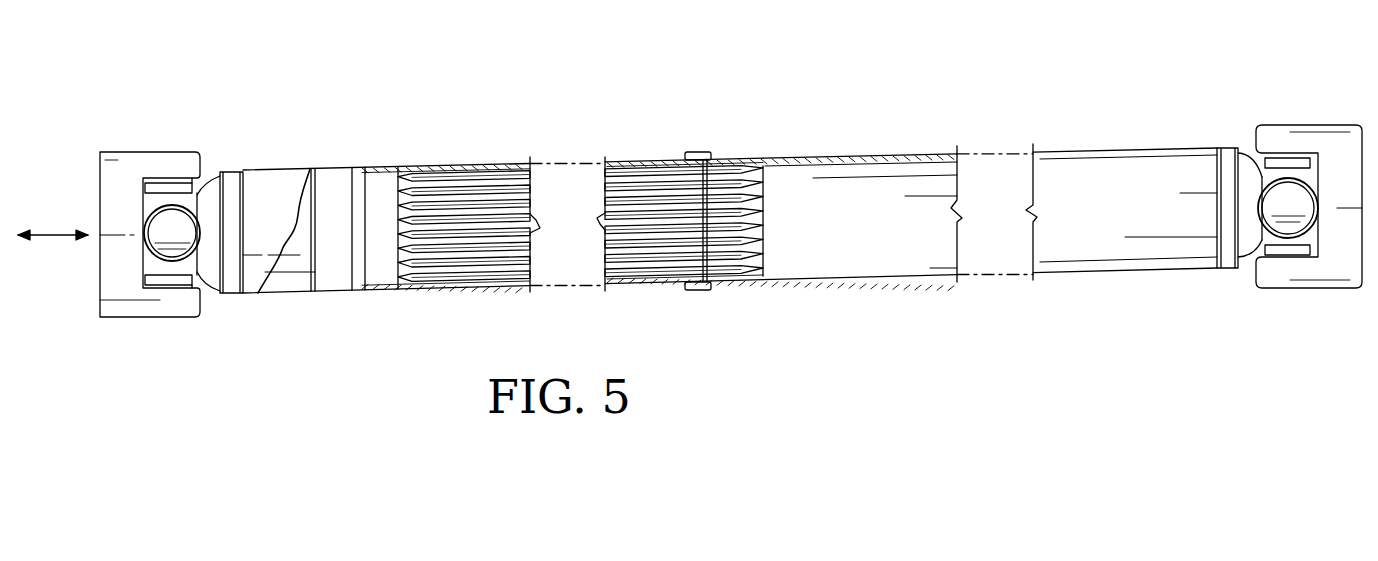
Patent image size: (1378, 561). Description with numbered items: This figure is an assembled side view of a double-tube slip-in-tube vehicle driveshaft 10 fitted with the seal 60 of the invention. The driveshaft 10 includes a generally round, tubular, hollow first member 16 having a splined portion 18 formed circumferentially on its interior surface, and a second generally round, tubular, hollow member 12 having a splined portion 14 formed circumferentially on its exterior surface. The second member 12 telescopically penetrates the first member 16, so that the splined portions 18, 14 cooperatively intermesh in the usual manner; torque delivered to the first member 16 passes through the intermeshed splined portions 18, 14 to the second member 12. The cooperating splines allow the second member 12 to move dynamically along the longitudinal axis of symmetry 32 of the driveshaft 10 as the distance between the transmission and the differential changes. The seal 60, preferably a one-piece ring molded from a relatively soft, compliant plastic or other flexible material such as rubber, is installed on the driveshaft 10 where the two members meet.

The vehicle driveshaft 10 is at (1087, 70).
The second member 12 is at (914, 153).
The splined portion 14 is at (740, 286).
The first member 16 is at (443, 166).
The splined portion 18 is at (653, 290).
The longitudinal axis of symmetry 32 is at (55, 235).
The seal 60 is at (710, 157).